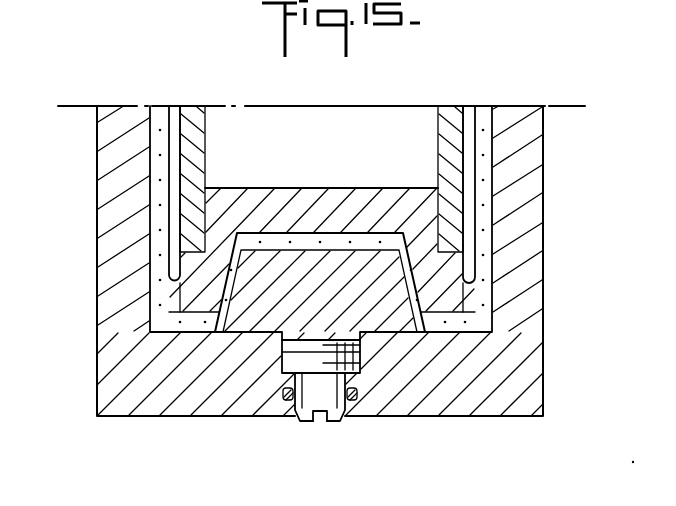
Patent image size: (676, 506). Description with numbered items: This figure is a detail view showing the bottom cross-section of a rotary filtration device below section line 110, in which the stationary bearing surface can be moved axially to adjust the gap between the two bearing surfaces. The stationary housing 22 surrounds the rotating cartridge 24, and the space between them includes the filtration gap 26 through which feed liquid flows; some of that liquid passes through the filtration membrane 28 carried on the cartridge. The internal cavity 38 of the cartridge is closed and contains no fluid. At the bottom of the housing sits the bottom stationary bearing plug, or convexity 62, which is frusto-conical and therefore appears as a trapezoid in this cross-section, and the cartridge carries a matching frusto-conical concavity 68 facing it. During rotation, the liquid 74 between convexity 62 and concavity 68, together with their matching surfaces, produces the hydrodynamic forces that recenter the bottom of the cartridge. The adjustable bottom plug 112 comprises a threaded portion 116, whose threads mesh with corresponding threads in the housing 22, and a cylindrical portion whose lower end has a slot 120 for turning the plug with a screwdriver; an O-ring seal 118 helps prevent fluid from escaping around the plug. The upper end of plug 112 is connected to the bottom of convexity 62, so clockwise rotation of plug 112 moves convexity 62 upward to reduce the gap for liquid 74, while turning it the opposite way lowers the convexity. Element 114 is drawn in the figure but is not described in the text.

The section line 110 is at (85, 105).
The housing 22 is at (97, 197).
The cartridge 24 is at (160, 157).
The filtration gap 26 is at (157, 232).
The filtration membrane 28 is at (165, 267).
The internal cavity 38 is at (243, 128).
The convexity 62 is at (337, 305).
The frusto-conical concavity 68 is at (279, 230).
The liquid 74 is at (352, 240).
The adjustable bottom plug 112 is at (300, 433).
The bolt shank 114 is at (340, 423).
The threaded portion 116 is at (363, 357).
The O-ring seal 118 is at (283, 398).
The slot 120 is at (320, 425).